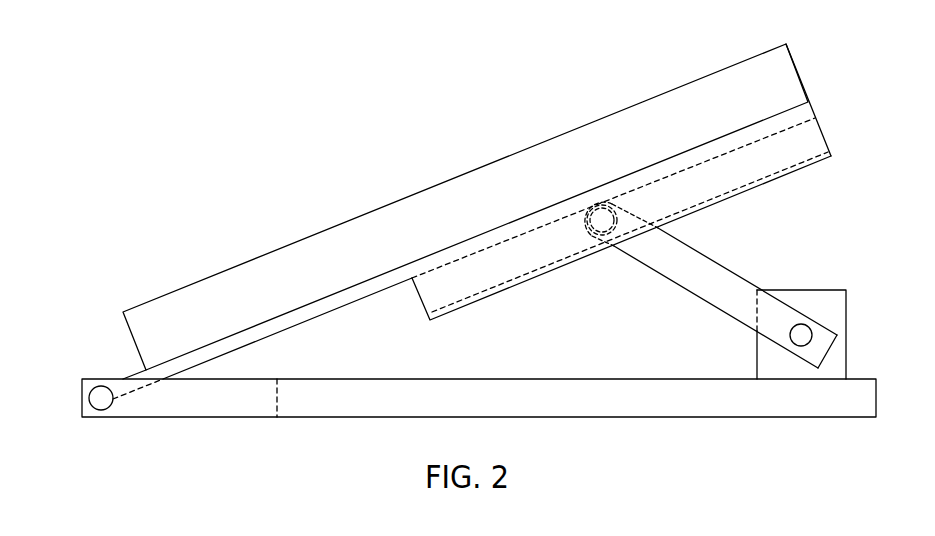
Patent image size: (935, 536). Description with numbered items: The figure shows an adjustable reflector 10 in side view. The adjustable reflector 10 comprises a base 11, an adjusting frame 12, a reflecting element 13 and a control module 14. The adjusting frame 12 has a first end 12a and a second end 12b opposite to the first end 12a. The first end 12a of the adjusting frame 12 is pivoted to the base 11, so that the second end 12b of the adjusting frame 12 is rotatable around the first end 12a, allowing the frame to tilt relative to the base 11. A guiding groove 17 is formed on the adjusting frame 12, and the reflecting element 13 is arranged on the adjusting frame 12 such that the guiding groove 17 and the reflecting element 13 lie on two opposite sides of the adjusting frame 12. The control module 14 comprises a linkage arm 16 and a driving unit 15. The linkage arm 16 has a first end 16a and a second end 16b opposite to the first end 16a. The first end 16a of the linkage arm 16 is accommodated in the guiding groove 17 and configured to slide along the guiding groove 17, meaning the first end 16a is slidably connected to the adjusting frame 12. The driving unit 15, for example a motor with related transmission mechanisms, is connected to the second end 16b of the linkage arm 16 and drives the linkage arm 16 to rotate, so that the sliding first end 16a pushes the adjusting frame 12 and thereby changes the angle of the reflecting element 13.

The adjustable reflector 10 is at (211, 66).
The base 11 is at (558, 411).
The adjusting frame 12 is at (333, 303).
The first end 12a is at (94, 362).
The second end 12b is at (824, 96).
The reflecting element 13 is at (492, 178).
The control module 14 is at (838, 258).
The driving unit 15 is at (846, 296).
The linkage arm 16 is at (712, 270).
The first end 16a is at (593, 260).
The second end 16b is at (847, 348).
The guiding groove 17 is at (818, 135).